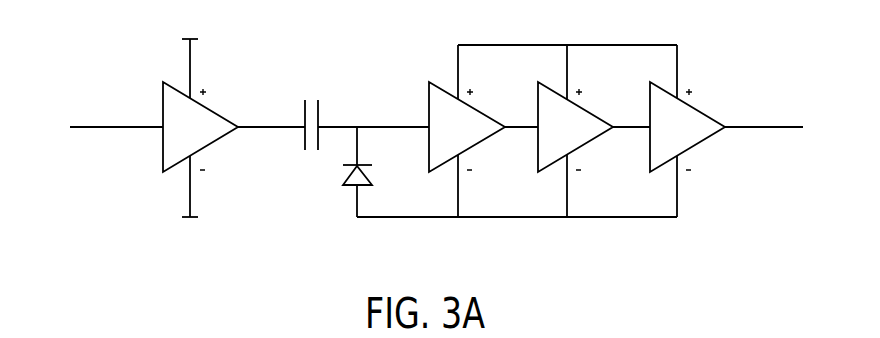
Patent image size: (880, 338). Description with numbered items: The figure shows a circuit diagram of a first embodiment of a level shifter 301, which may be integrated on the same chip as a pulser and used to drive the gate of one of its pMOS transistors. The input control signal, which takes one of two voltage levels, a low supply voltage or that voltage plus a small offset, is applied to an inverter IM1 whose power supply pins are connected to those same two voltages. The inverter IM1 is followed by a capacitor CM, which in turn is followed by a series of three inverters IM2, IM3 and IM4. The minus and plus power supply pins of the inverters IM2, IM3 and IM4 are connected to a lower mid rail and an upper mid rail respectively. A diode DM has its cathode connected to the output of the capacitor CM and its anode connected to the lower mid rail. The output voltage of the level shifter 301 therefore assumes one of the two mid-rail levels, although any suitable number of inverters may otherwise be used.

The level shifter 301 is at (100, 65).
The inverter IM1 is at (200, 128).
The inverter IM2 is at (467, 131).
The inverter IM3 is at (575, 131).
The inverter IM4 is at (687, 131).
The capacitor CM is at (311, 107).
The diode DM is at (371, 179).